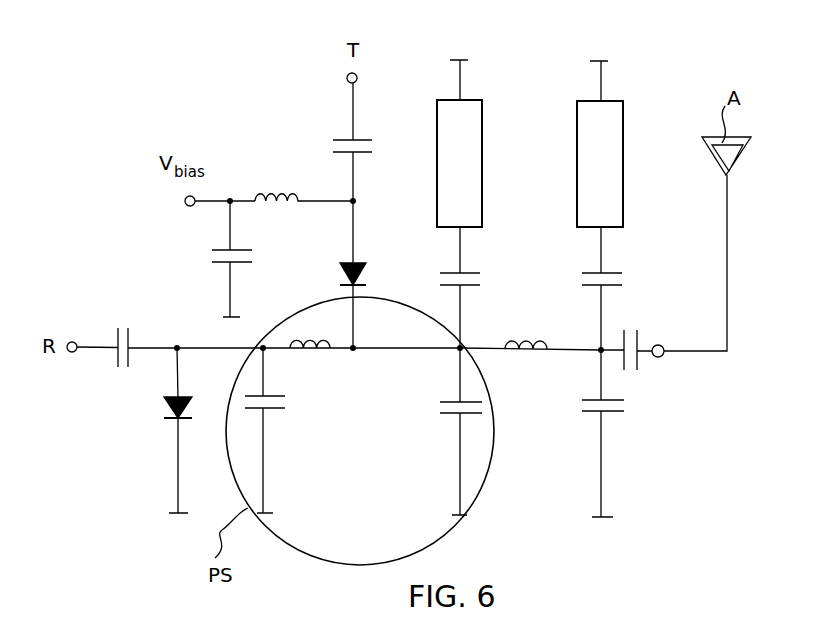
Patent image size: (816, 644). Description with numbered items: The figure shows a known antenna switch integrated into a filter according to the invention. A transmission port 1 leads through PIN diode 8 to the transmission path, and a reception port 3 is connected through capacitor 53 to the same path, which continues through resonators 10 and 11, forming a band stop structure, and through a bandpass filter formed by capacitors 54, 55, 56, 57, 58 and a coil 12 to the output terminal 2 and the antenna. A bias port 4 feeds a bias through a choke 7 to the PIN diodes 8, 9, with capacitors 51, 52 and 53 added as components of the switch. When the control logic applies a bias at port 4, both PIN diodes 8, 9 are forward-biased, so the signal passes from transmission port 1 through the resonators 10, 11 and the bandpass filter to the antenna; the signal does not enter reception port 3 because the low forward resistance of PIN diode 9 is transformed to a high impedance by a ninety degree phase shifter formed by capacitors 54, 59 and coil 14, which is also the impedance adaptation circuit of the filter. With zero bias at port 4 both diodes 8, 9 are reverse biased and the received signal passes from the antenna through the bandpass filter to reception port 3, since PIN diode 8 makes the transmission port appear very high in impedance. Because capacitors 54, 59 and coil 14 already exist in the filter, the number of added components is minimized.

The transmission port 1 is at (347, 82).
The antenna terminal 2 is at (663, 356).
The reception port 3 is at (73, 355).
The bias port 4 is at (183, 202).
The choke 7 is at (282, 196).
The PIN diode 8 is at (340, 273).
The PIN diode 9 is at (165, 408).
The resonator 10 is at (642, 127).
The resonator 11 is at (500, 125).
The coil 12 is at (503, 335).
The coil 14 is at (330, 343).
The capacitor 51 is at (212, 258).
The capacitor 52 is at (347, 140).
The capacitor 53 is at (134, 312).
The capacitor 54 is at (453, 397).
The capacitor 55 is at (486, 304).
The capacitor 56 is at (575, 305).
The capacitor 57 is at (638, 332).
The capacitor 58 is at (627, 405).
The capacitor 59 is at (292, 402).